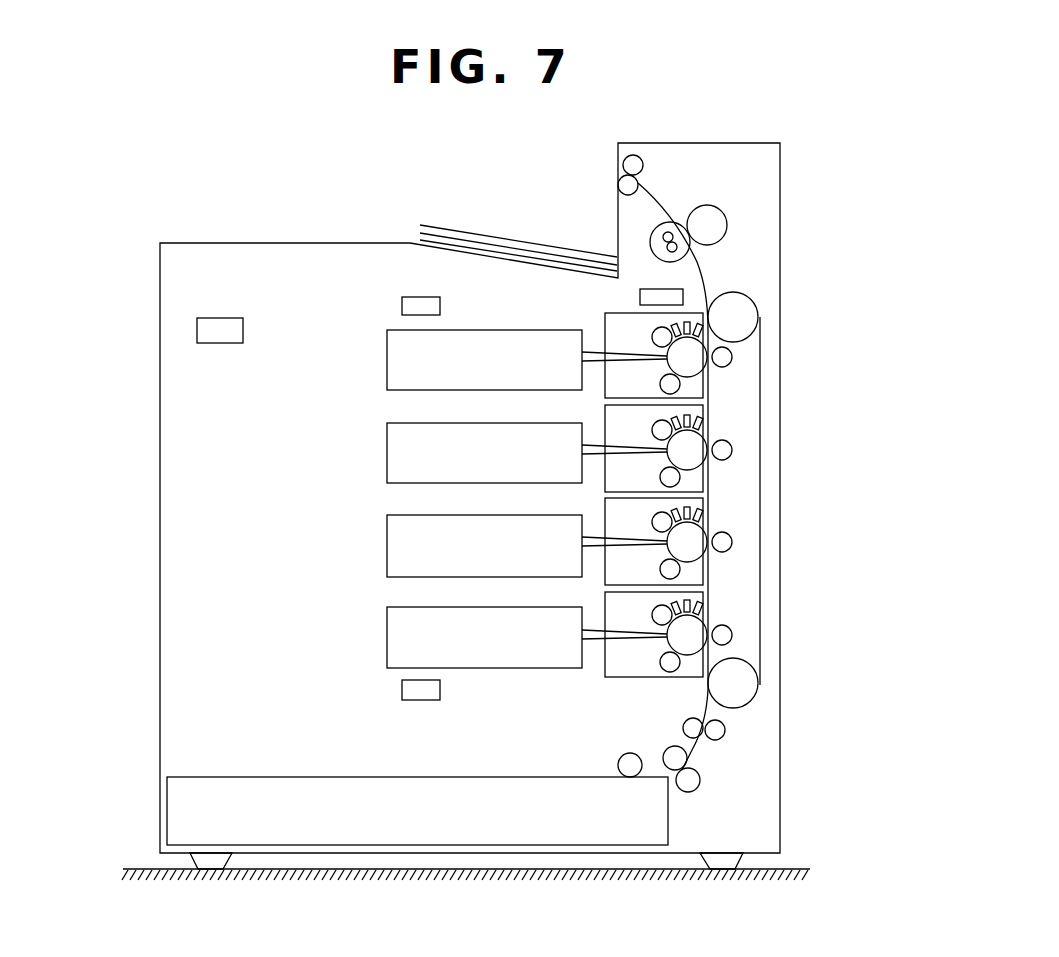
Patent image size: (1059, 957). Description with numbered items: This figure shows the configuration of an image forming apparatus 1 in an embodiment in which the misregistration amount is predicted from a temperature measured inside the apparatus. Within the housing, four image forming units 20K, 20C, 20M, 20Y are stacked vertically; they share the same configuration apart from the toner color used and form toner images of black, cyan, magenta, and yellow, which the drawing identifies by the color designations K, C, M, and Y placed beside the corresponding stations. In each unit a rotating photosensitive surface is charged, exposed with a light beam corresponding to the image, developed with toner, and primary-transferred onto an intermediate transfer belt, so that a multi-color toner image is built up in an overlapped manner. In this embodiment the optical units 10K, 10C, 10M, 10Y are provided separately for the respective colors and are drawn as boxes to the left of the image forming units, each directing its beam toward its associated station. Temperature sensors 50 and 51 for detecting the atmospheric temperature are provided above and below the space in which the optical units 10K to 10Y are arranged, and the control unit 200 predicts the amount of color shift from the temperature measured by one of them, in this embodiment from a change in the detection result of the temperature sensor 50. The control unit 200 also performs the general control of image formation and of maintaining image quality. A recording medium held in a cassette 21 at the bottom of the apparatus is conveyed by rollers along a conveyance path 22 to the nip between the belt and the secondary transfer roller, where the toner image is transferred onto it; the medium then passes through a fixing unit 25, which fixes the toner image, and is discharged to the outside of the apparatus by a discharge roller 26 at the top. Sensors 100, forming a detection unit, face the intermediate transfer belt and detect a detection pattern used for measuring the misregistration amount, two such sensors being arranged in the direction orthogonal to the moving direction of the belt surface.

The image forming apparatus 1 is at (160, 378).
The control unit 200 is at (207, 322).
The temperature sensor 51 is at (412, 297).
The sensor (detection unit) 100 is at (640, 297).
The temperature sensor 50 is at (402, 690).
The optical unit 10K is at (392, 352).
The optical unit 10C is at (392, 444).
The optical unit 10M is at (392, 537).
The optical unit 10Y is at (392, 626).
The image forming unit 20K is at (610, 380).
The image forming unit 20C is at (610, 472).
The image forming unit 20M is at (610, 565).
The image forming unit 20Y is at (610, 657).
The photosensitive drum (black) K is at (690, 387).
The photosensitive drum (cyan) C is at (690, 480).
The photosensitive drum (magenta) M is at (690, 572).
The photosensitive drum (yellow) Y is at (690, 665).
The conveyance path 22 is at (712, 712).
The fixing unit 25 is at (727, 218).
The discharge roller 26 is at (623, 165).
The cassette 21 is at (499, 835).